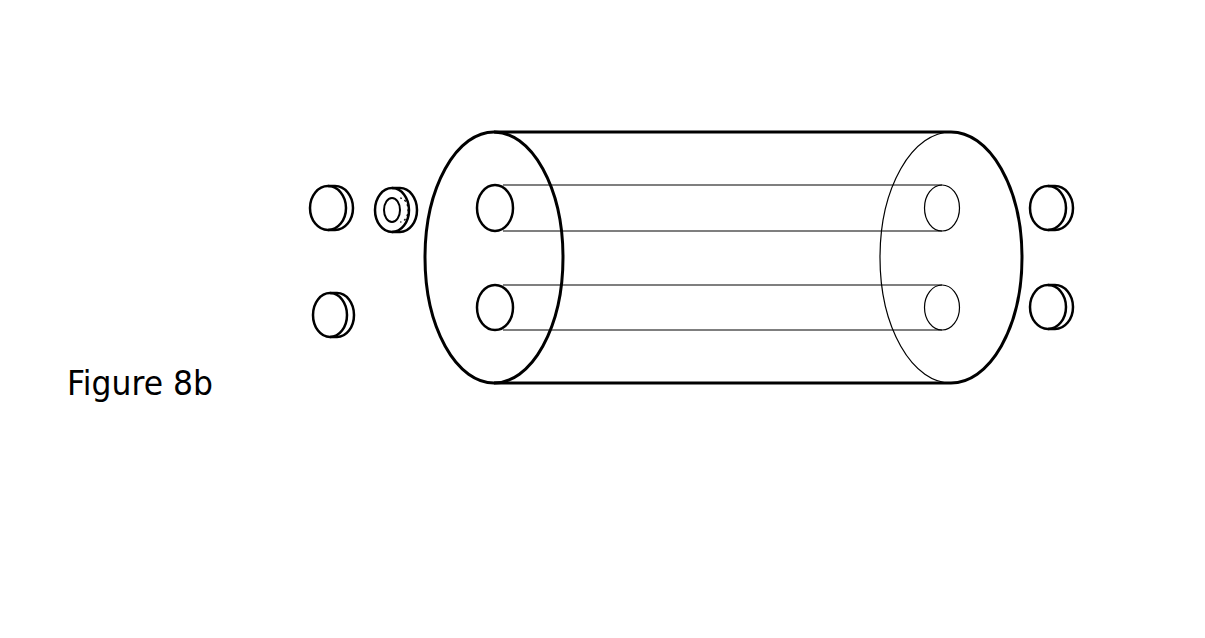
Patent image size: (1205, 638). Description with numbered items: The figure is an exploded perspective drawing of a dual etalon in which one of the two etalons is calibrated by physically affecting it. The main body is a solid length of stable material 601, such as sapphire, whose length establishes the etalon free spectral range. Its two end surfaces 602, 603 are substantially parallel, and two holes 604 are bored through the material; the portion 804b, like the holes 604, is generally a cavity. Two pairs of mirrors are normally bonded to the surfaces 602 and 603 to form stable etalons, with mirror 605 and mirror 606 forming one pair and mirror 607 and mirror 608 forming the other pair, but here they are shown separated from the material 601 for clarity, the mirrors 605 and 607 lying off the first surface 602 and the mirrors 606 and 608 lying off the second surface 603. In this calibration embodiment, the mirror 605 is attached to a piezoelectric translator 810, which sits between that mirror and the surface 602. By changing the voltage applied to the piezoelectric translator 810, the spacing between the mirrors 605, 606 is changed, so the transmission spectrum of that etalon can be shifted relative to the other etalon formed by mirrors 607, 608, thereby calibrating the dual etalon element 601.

The stable material 601 is at (696, 131).
The surface 602 is at (468, 168).
The surface 603 is at (968, 168).
The holes 604 is at (482, 208).
The portion 804b is at (809, 204).
The mirror 605 is at (327, 210).
The mirror 606 is at (1076, 206).
The mirror 607 is at (327, 318).
The mirror 608 is at (1075, 308).
The piezoelectric translator 810 is at (381, 192).